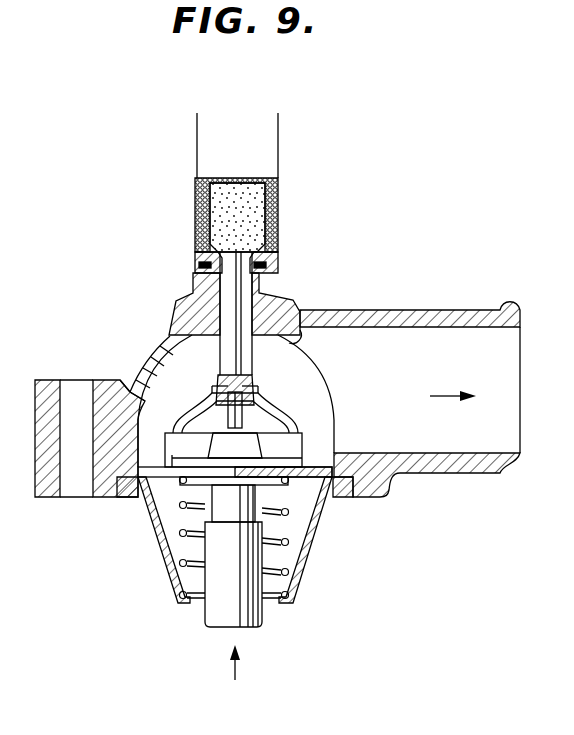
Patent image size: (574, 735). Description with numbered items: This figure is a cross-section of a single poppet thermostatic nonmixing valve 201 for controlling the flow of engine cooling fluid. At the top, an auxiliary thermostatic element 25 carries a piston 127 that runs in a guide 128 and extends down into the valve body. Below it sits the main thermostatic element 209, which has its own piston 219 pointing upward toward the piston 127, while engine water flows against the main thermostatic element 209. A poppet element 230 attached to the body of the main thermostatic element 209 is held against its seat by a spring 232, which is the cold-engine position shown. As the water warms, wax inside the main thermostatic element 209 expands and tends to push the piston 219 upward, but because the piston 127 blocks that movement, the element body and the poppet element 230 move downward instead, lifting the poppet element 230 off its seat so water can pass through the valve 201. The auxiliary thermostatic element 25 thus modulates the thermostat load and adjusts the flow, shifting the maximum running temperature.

The auxiliary thermostatic element 25 is at (293, 215).
The single poppet thermostatic valve 201 is at (113, 307).
The piston 127 is at (287, 291).
The guide 128 is at (212, 297).
The piston 219 is at (252, 416).
The poppet element 230 is at (170, 471).
The main thermostatic element 209 is at (210, 613).
The spring 232 is at (284, 574).